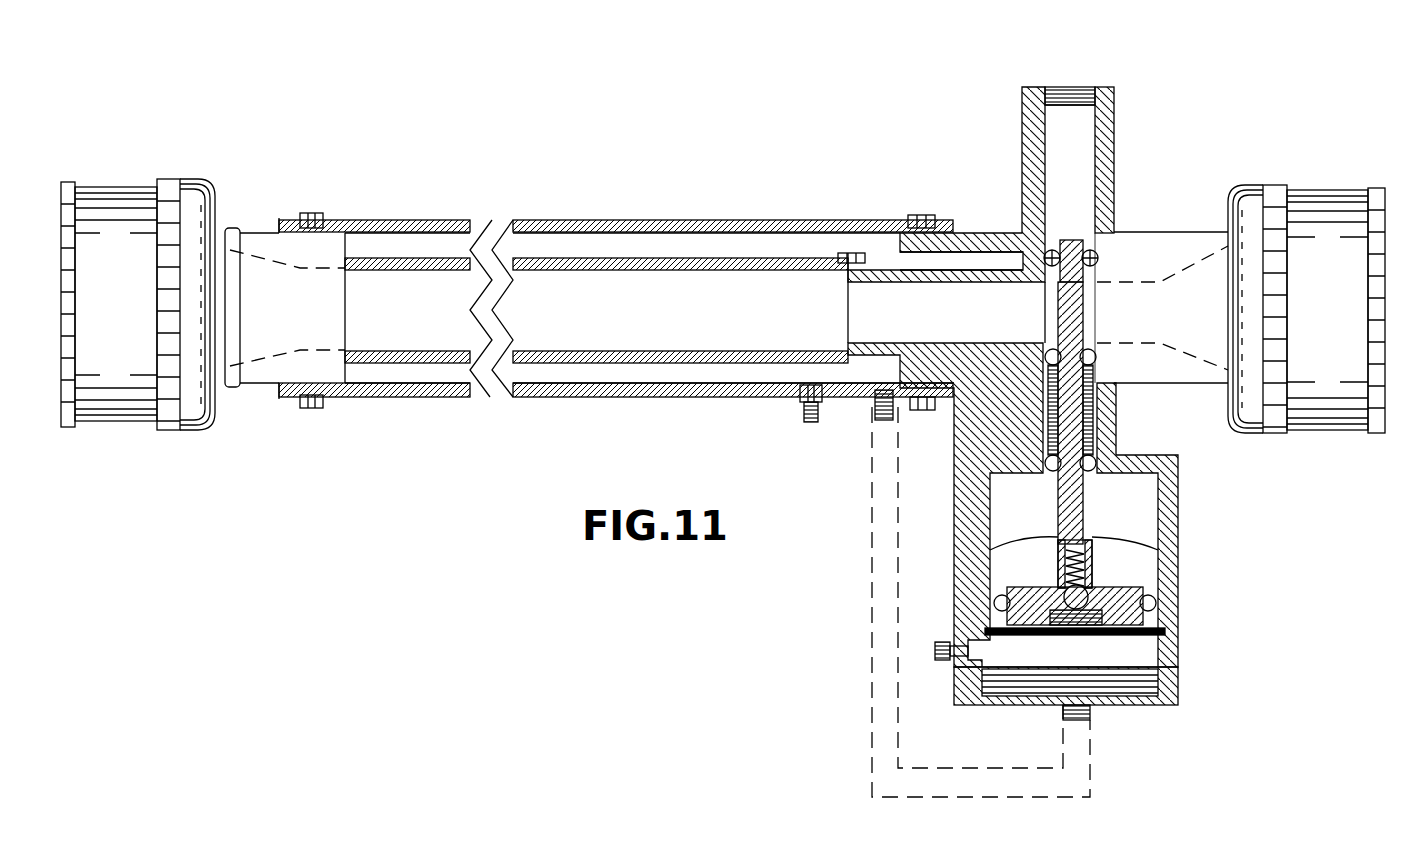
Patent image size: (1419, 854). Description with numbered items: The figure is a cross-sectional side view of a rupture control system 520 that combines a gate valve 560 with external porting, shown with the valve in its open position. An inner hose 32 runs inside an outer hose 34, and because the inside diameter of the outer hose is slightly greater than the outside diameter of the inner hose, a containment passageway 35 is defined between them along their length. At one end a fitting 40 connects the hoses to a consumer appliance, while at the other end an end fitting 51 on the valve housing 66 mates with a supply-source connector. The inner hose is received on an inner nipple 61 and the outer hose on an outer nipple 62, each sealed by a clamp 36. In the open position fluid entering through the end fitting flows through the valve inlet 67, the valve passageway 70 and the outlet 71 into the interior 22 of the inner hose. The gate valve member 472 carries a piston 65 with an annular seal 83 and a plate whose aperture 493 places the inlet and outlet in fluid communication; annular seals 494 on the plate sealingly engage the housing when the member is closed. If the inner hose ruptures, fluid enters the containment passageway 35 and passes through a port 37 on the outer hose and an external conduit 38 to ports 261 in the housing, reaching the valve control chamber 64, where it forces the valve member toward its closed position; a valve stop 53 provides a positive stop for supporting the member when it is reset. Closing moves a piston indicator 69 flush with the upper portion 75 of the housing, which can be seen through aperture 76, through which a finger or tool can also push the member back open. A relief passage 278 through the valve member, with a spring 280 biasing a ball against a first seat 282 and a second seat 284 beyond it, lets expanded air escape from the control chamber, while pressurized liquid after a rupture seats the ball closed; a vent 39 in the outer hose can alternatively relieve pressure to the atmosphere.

The interior of inner hose 22 is at (558, 308).
The inner hose 32 is at (615, 262).
The outer hose 34 is at (420, 215).
The containment/control passageway 35 is at (710, 247).
The clamp 36 is at (311, 214).
The port 37 is at (878, 426).
The external conduit 38 is at (900, 535).
The vent 39 is at (812, 424).
The fitting 40 is at (188, 412).
The end fitting 51 is at (1360, 412).
The valve stop 53 is at (1030, 630).
The inner nipple 61 is at (885, 275).
The outer nipple 62 is at (957, 225).
The valve control chamber 64 is at (1140, 656).
The piston 65 is at (1166, 630).
The valve housing 66 is at (1140, 702).
The valve inlet 67 is at (1103, 310).
The piston indicator 69 is at (1090, 248).
The valve passageway 70 is at (1050, 250).
The outlet 71 is at (1038, 316).
The upper portion of valve housing 75 is at (1089, 87).
The aperture 76 is at (1116, 108).
The annular seal 83 is at (1152, 603).
The ports 261 is at (955, 660).
The relief passage 278 is at (1085, 522).
The spring 280 is at (1090, 582).
The first seat 282 is at (957, 618).
The second seat 284 is at (990, 548).
The valve member 472 is at (1092, 545).
The aperture 493 is at (1096, 332).
The annular seals 494 is at (1040, 380).
The rupture control system 520 is at (1262, 513).
The plate 560 is at (1183, 561).